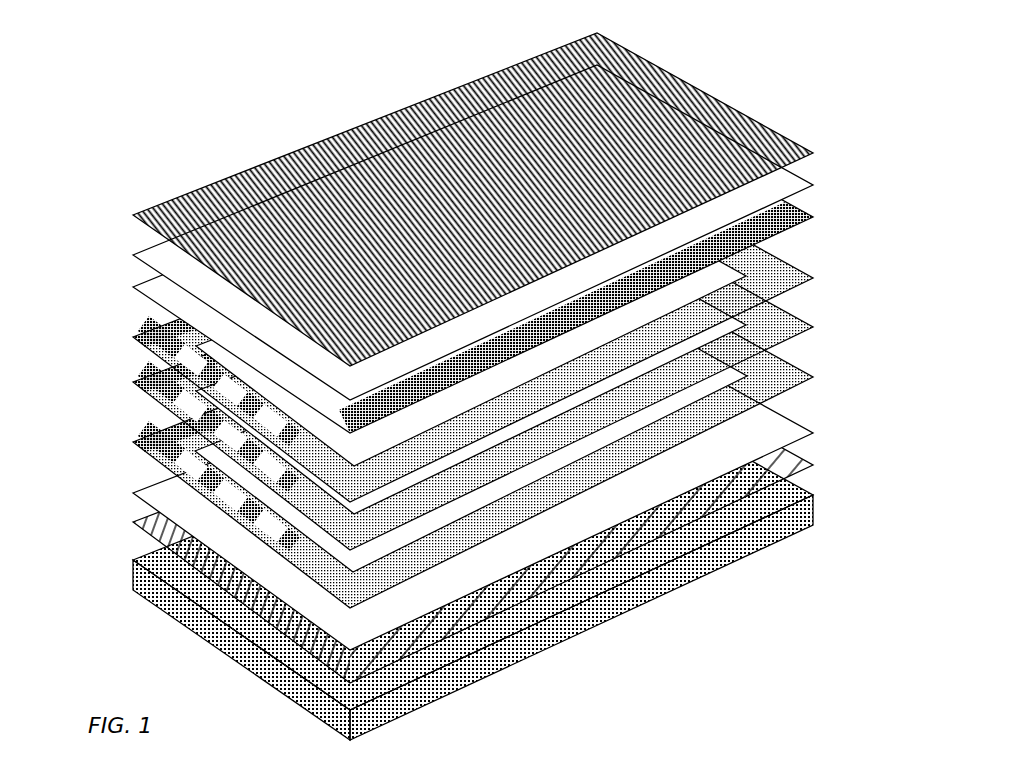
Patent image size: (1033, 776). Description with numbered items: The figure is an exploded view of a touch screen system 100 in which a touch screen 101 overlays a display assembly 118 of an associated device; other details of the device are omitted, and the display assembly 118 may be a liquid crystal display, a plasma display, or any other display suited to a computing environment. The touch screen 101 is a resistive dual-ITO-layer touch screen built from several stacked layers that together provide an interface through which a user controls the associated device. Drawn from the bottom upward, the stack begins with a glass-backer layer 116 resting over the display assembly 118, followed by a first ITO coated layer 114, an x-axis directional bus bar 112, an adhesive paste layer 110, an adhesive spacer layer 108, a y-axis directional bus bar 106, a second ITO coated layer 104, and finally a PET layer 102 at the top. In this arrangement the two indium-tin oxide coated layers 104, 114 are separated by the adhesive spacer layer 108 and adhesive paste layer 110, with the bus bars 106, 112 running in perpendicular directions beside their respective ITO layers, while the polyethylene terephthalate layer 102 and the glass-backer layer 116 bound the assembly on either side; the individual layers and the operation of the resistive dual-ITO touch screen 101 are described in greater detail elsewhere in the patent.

The touch screen system 100 is at (790, 26).
The touch screen 101 is at (817, 123).
The PET layer 102 is at (141, 213).
The second ITO coated layer 104 is at (147, 254).
The y-axis directional bus bar 106 is at (147, 290).
The adhesive spacer layer 108 is at (141, 337).
The adhesive paste layer 110 is at (141, 381).
The x-axis directional bus bar 112 is at (141, 440).
The first ITO coated layer 114 is at (141, 491).
The glass-backer layer 116 is at (139, 521).
The display assembly 118 is at (139, 566).